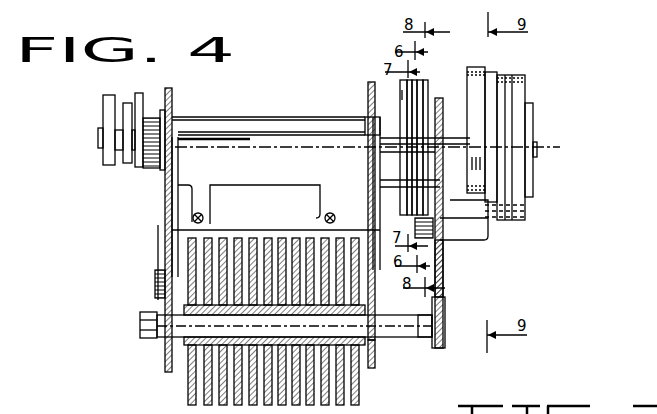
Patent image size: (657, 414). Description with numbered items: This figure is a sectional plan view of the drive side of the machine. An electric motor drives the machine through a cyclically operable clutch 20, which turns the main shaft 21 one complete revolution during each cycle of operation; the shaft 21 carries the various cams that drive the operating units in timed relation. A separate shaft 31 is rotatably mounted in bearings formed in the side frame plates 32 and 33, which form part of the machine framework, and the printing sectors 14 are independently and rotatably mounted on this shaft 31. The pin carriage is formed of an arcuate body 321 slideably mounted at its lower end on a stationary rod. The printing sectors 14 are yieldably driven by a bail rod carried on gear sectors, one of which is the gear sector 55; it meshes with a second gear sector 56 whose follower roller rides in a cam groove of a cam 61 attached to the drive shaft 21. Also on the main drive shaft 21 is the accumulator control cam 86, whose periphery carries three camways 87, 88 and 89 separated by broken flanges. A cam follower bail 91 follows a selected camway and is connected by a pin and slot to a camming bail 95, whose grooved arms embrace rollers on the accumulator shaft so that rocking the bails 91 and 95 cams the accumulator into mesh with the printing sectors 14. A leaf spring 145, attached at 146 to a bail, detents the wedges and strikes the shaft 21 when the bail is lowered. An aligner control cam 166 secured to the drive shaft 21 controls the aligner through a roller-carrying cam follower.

The printing sectors 14 is at (253, 405).
The clutch 20 is at (527, 204).
The main shaft 21 is at (535, 143).
The shaft 31 is at (376, 316).
The side frame plate 32 is at (163, 364).
The side frame plate 33 is at (373, 355).
The arcuate body 321 is at (372, 405).
The gear sector 55 is at (443, 305).
The second gear sector 56 is at (443, 262).
The cam 61 is at (470, 67).
The accumulator control cam 86 is at (433, 77).
The camway 87 is at (402, 97).
The camway 88 is at (368, 96).
The camway 89 is at (430, 95).
The cam follower bail 91 is at (488, 232).
The camming bail 95 is at (207, 122).
The leaf spring 145 is at (256, 189).
The attachment 146 is at (330, 218).
The aligner control cam 166 is at (131, 168).